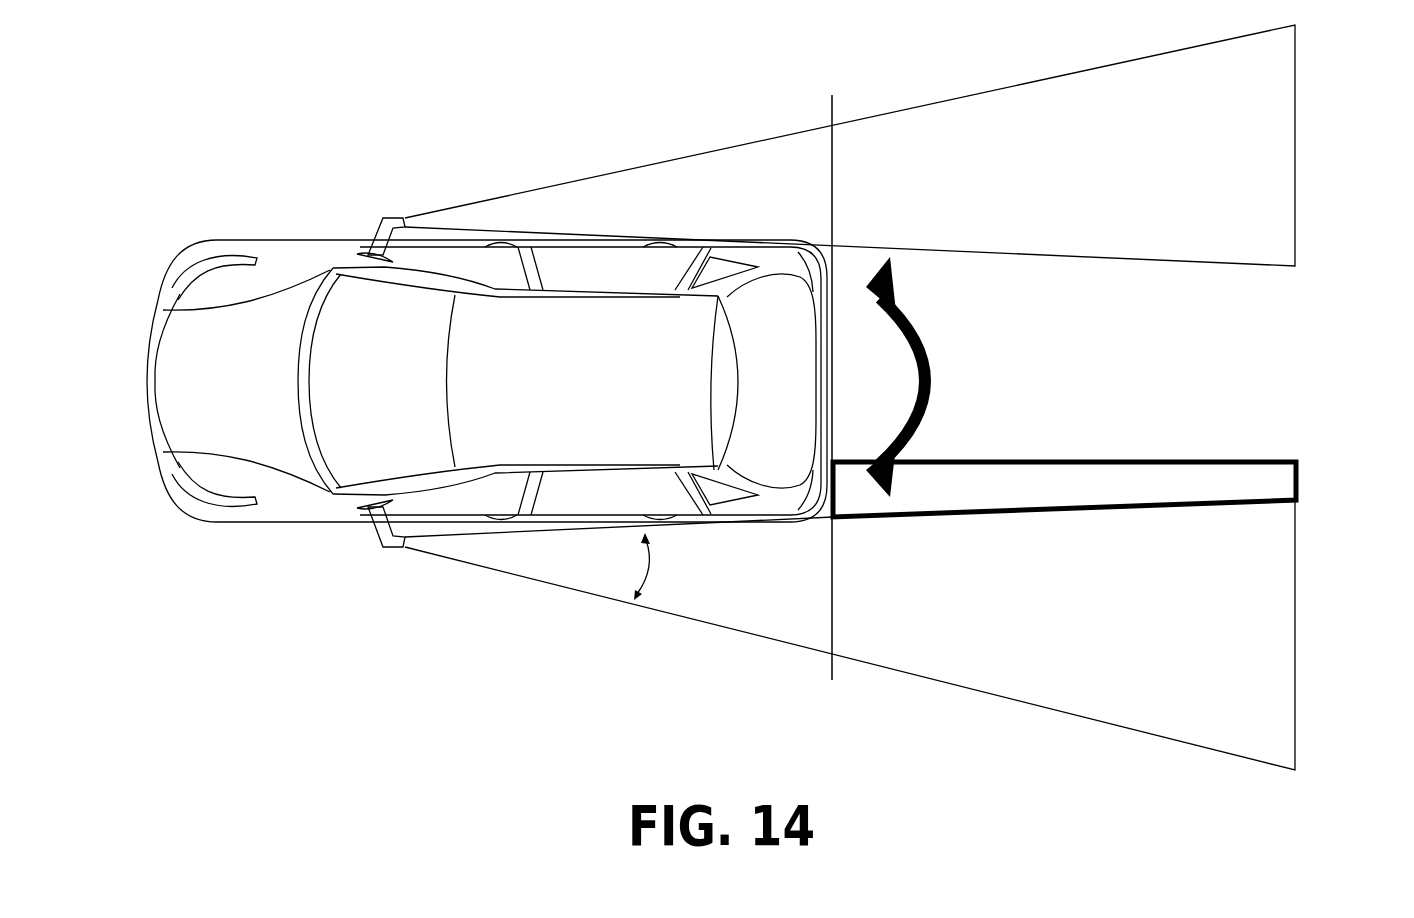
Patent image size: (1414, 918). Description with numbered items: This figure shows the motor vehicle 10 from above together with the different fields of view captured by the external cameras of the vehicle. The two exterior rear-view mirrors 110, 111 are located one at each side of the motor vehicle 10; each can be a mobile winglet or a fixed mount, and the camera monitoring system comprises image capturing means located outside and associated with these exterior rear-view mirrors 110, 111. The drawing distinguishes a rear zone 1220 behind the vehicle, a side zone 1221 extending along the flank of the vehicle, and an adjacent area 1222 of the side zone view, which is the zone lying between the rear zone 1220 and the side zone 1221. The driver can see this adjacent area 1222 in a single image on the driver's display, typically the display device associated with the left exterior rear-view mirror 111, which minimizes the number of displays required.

The motor vehicle 10 is at (255, 383).
The exterior rear-view mirror 110 is at (382, 228).
The exterior rear-view mirror 111 is at (377, 542).
The rear zone 1220 is at (933, 377).
The side zone 1221 is at (652, 572).
The adjacent area 1222 is at (1124, 484).